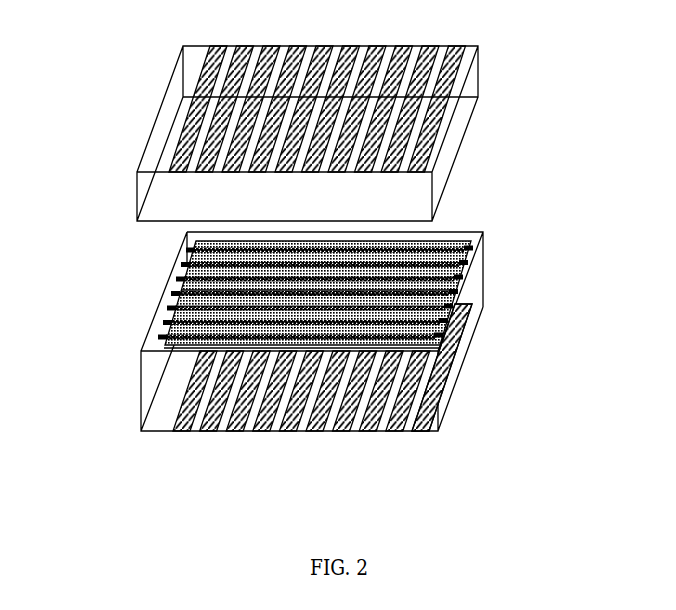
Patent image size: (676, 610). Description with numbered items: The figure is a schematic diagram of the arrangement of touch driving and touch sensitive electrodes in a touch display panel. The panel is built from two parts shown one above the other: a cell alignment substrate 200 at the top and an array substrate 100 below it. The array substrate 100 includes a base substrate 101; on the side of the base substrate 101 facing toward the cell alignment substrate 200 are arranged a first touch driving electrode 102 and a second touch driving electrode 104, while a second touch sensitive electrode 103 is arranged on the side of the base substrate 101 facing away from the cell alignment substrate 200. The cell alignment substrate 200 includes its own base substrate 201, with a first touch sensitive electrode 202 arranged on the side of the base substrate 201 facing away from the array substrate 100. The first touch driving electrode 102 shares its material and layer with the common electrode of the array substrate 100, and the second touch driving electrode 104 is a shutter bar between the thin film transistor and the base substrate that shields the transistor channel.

The array substrate 100 is at (304, 366).
The base substrate 101 is at (480, 287).
The first touch driving electrode 102 is at (468, 262).
The second touch sensitive electrode 103 is at (400, 431).
The second touch driving electrode 104 is at (463, 322).
The cell alignment substrate 200 is at (304, 129).
The base substrate 201 is at (450, 148).
The first touch sensitive electrode 202 is at (450, 73).